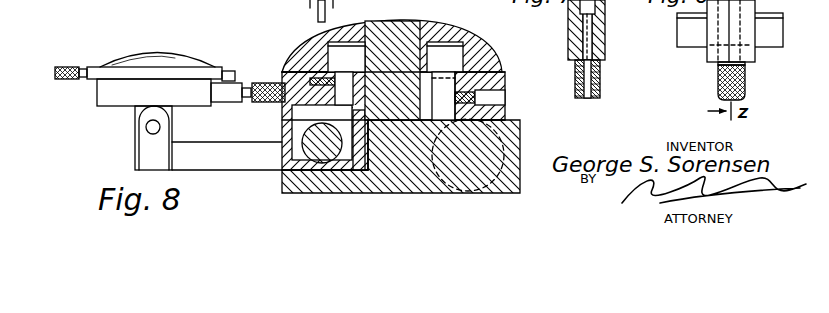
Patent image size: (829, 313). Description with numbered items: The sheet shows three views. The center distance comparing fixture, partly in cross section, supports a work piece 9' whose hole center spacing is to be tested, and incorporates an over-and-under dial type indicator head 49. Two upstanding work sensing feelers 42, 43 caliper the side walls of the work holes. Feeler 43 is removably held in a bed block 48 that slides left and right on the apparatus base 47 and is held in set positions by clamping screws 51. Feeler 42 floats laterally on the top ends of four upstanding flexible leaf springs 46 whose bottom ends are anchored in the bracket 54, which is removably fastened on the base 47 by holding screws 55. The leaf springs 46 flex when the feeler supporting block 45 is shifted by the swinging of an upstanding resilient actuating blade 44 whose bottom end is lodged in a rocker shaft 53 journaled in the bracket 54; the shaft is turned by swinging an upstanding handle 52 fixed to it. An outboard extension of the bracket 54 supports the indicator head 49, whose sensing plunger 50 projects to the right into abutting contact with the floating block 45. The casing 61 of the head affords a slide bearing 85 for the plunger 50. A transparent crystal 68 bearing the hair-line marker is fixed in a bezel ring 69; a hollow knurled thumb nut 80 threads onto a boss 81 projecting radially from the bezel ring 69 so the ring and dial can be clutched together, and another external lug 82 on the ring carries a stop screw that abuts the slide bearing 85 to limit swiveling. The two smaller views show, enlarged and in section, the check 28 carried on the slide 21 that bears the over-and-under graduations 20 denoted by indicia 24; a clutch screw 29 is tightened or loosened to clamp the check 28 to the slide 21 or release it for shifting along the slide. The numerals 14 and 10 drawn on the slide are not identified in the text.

In FIG. 8, the knurled thumb nut 80 is at (66, 66).
In FIG. 8, the boss 81 is at (82, 66).
In FIG. 8, the indicator head 49 is at (149, 59).
In FIG. 8, the crystal 68 is at (162, 58).
In FIG. 8, the bezel ring 69 is at (190, 72).
In FIG. 8, the casing 61 is at (154, 92).
In FIG. 8, the external lug 82 is at (230, 71).
In FIG. 8, the slide bearing 85 is at (231, 92).
In FIG. 8, the sensing plunger 50 is at (258, 80).
In FIG. 8, the feeler supporting block 45 is at (300, 82).
In FIG. 8, the bracket 54 is at (178, 152).
In FIG. 8, the rocker shaft 53 is at (282, 140).
In FIG. 8, the resilient actuating blade 44 is at (290, 124).
In FIG. 8, the flexible leaf springs 46 is at (345, 128).
In FIG. 8, the work sensing feeler 42 is at (346, 73).
In FIG. 8, the work sensing feeler 43 is at (445, 81).
In FIG. 8, the work piece 9' is at (399, 46).
In FIG. 8, the bed block 48 is at (498, 108).
In FIG. 8, the holding screws 55 is at (342, 202).
In FIG. 8, the clamping screws 51 is at (444, 193).
In FIG. 8, the apparatus base 47 is at (401, 167).
In FIG. 8, the handle 52 is at (318, 16).
In FIG. 7, the slide 21 is at (592, 40).
In FIG. 6, the slide 21 is at (702, 45).
In FIG. 7, the check 28 is at (600, 47).
In FIG. 6, the check 28 is at (718, 62).
In FIG. 7, the clutch screw 29 is at (598, 78).
In FIG. 6, the clutch screw 29 is at (748, 74).
In FIG. 6, the over-and-under graduations 20 is at (705, 40).
In FIG. 6, the indicia 24 is at (690, 33).
In FIG. 6, the plate 14 is at (730, 30).
In FIG. 6, the plate 10 is at (766, 23).